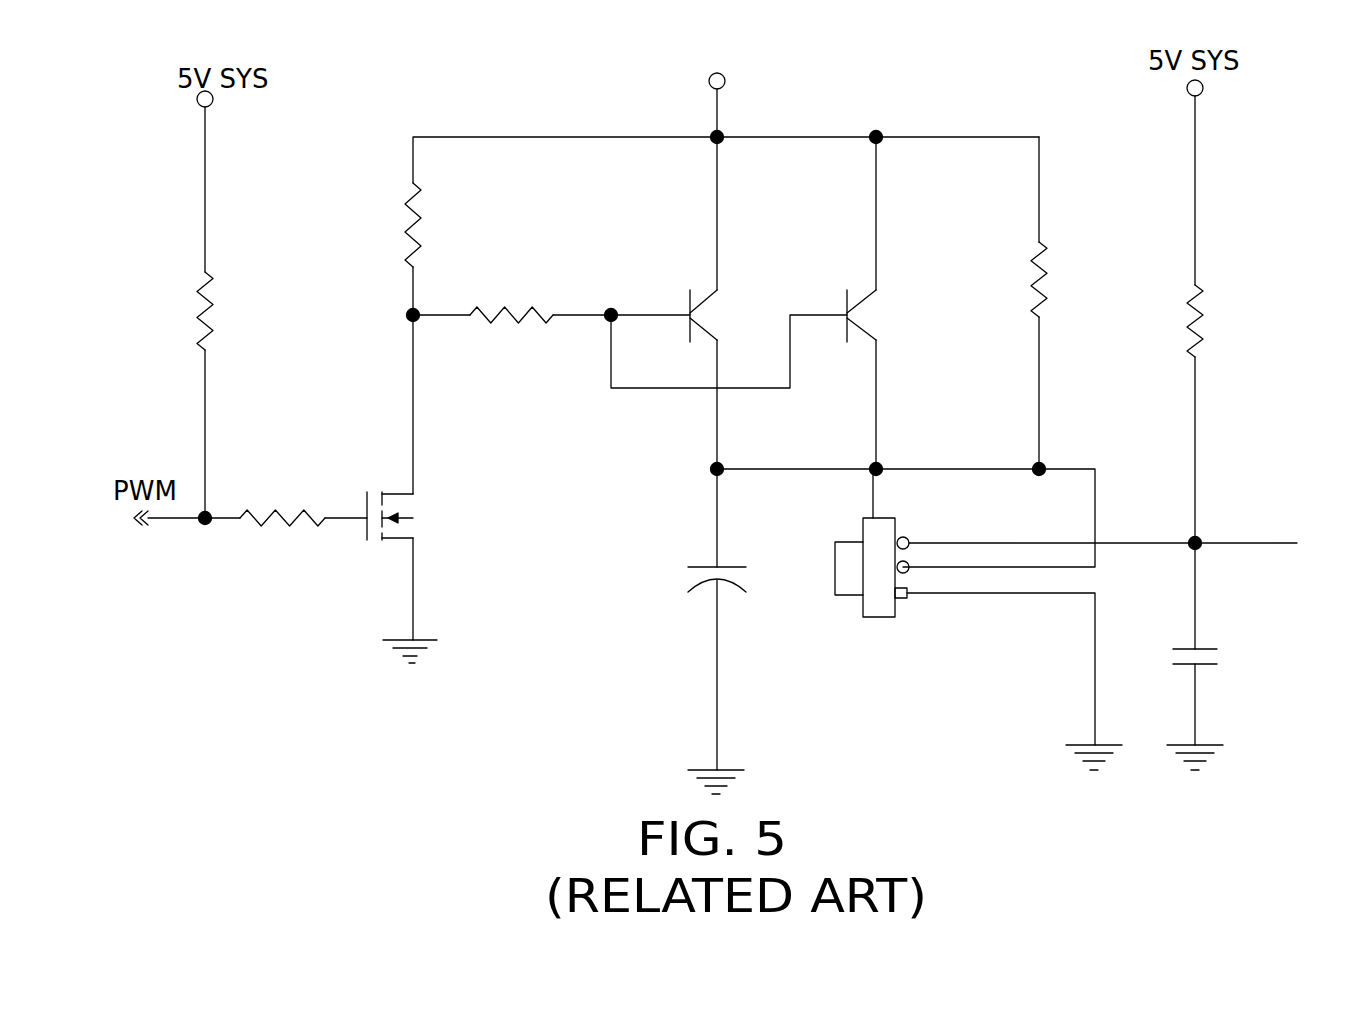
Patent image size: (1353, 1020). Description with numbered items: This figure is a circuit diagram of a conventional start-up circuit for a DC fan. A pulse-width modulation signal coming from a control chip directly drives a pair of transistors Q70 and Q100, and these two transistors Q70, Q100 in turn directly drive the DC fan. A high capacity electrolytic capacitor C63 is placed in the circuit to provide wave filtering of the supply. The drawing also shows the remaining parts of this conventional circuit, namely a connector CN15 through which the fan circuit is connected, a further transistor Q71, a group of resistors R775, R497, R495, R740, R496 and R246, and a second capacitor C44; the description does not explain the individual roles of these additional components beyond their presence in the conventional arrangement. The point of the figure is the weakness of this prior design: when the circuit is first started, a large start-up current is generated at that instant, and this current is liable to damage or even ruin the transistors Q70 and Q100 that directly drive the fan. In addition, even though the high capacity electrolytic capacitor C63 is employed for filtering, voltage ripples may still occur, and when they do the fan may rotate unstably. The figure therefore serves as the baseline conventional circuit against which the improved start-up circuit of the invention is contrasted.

The pull-up resistor R775 is at (246, 311).
The gate resistor R497 is at (283, 499).
The MOSFET transistor Q71 is at (416, 514).
The resistor R495 is at (454, 225).
The base resistor R740 is at (515, 296).
The transistor Q70 is at (718, 312).
The transistor Q100 is at (886, 312).
The resistor R496 is at (1070, 275).
The high capacity electrolytic capacitor C63 is at (747, 581).
The fan connector CN15 is at (882, 572).
The resistor R246 is at (1223, 316).
The capacitor C44 is at (1226, 658).